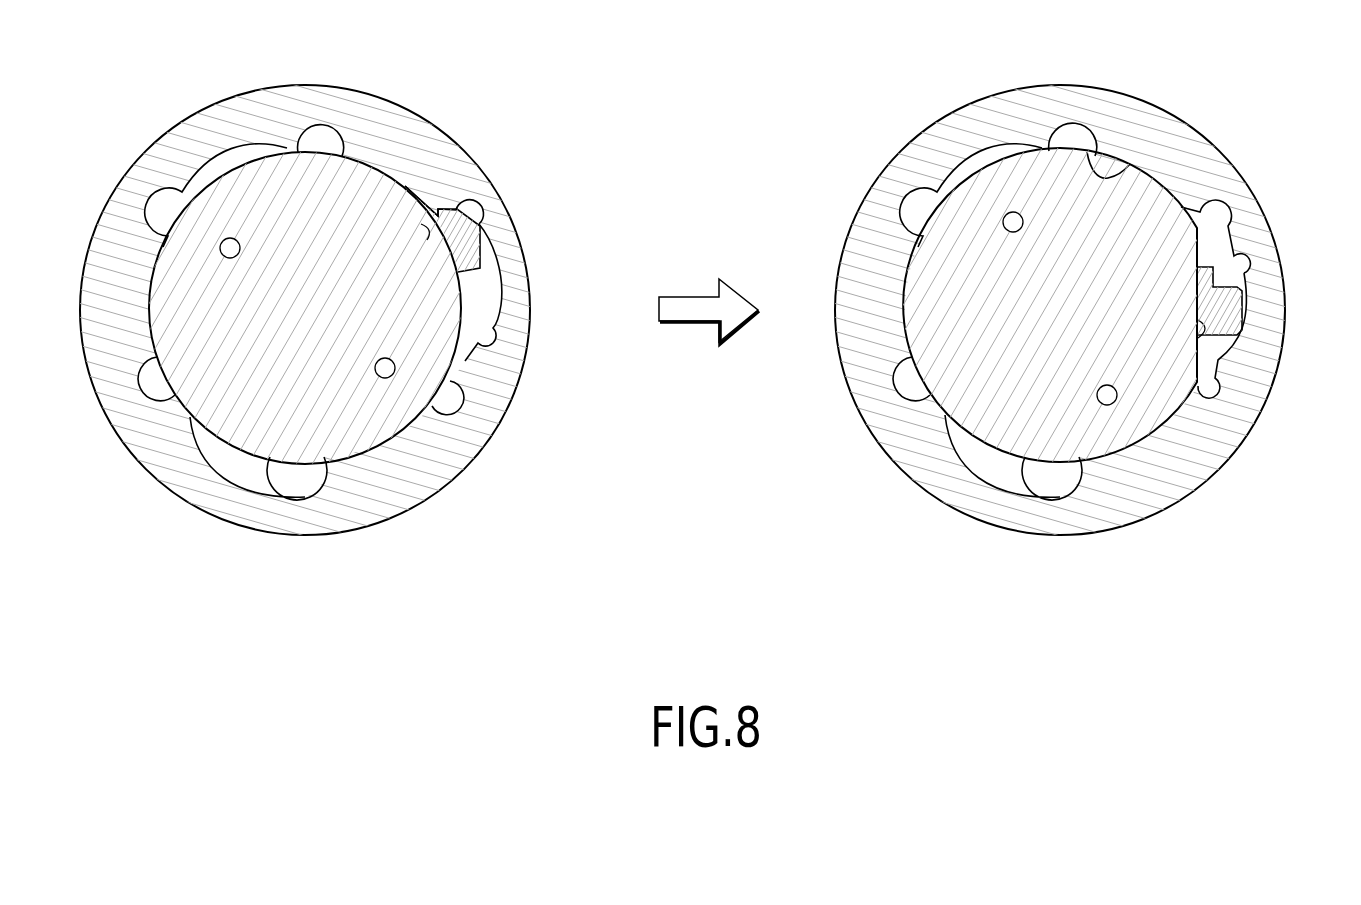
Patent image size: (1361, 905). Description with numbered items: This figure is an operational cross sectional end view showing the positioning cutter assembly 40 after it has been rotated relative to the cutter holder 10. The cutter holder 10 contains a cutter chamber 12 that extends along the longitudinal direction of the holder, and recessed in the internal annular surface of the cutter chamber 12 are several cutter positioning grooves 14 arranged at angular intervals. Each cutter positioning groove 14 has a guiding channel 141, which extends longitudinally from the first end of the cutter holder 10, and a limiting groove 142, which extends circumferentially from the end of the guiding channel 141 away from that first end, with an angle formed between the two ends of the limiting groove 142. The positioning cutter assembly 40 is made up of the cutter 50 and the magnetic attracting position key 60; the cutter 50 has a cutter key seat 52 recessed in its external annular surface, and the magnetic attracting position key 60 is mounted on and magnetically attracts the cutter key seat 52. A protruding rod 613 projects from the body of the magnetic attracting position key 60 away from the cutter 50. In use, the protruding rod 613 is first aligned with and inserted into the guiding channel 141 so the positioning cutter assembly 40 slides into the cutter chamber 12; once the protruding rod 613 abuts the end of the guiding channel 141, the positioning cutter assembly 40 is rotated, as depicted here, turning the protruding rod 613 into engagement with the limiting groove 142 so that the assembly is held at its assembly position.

The cutter holder 10 is at (128, 442).
The cutter chamber 12 is at (348, 448).
The cutter positioning groove 14 is at (486, 300).
The guiding channel 141 is at (447, 207).
The limiting groove 142 is at (478, 325).
The positioning cutter assembly 40 is at (226, 170).
The cutter 50 is at (352, 190).
The cutter key seat 52 is at (426, 238).
The magnetic attracting position key 60 is at (464, 272).
The protruding rod 613 is at (470, 247).